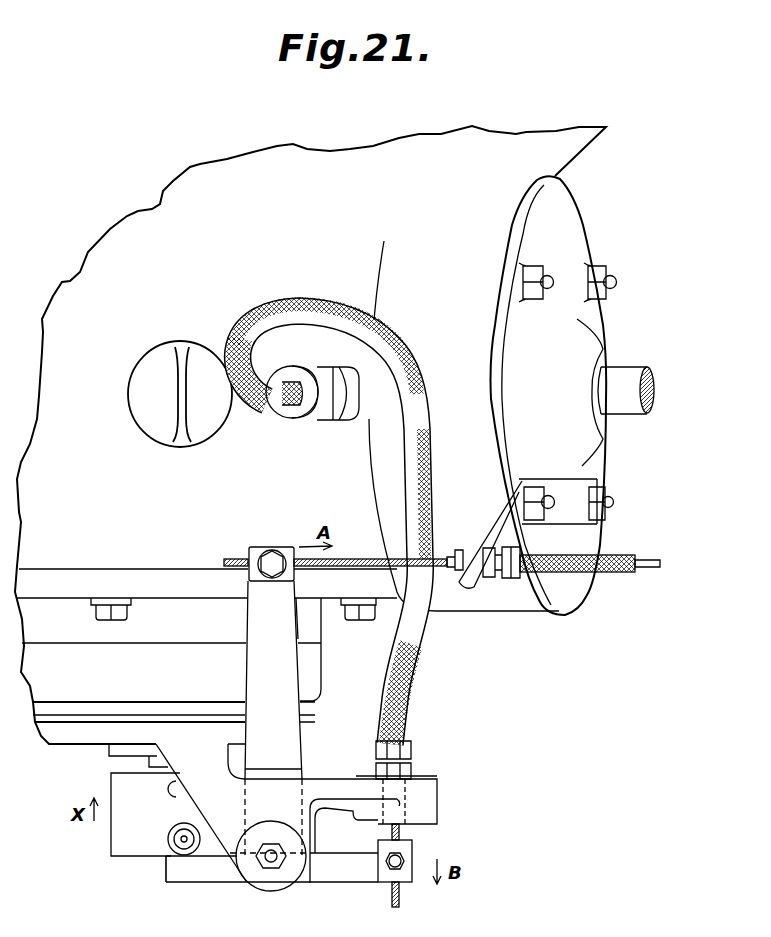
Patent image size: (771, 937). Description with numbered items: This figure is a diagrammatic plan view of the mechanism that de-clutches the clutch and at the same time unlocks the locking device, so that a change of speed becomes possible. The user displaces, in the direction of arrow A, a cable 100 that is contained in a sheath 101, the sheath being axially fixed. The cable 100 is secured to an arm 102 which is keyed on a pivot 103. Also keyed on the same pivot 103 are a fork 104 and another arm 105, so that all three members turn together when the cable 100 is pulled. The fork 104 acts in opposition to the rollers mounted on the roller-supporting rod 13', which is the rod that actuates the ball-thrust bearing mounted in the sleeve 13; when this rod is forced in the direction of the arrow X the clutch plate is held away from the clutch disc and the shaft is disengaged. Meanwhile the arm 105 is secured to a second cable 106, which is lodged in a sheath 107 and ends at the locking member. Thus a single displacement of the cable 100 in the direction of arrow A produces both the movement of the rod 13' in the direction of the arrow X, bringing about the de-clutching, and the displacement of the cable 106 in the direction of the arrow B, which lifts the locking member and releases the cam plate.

The sleeve 13 is at (158, 871).
The roller-supporting rod 13' is at (155, 818).
The cable 100 is at (442, 557).
The sheath 101 is at (594, 575).
The arm 102 is at (278, 682).
The pivot 103 is at (273, 870).
The fork 104 is at (212, 873).
The arm 105 is at (347, 878).
The cable 106 is at (402, 826).
The sheath 107 is at (432, 660).